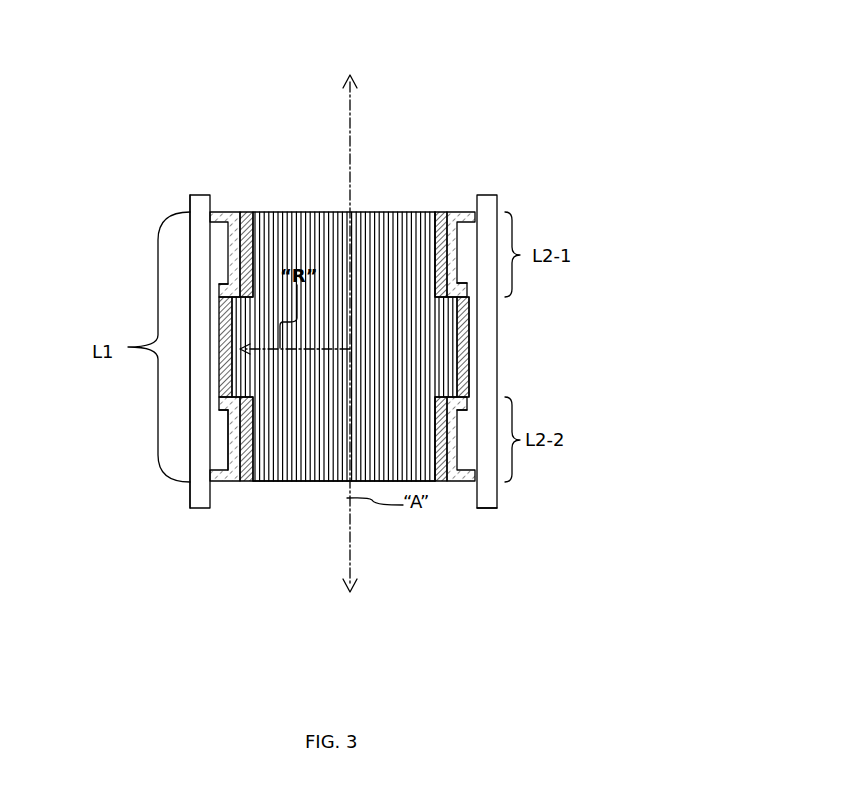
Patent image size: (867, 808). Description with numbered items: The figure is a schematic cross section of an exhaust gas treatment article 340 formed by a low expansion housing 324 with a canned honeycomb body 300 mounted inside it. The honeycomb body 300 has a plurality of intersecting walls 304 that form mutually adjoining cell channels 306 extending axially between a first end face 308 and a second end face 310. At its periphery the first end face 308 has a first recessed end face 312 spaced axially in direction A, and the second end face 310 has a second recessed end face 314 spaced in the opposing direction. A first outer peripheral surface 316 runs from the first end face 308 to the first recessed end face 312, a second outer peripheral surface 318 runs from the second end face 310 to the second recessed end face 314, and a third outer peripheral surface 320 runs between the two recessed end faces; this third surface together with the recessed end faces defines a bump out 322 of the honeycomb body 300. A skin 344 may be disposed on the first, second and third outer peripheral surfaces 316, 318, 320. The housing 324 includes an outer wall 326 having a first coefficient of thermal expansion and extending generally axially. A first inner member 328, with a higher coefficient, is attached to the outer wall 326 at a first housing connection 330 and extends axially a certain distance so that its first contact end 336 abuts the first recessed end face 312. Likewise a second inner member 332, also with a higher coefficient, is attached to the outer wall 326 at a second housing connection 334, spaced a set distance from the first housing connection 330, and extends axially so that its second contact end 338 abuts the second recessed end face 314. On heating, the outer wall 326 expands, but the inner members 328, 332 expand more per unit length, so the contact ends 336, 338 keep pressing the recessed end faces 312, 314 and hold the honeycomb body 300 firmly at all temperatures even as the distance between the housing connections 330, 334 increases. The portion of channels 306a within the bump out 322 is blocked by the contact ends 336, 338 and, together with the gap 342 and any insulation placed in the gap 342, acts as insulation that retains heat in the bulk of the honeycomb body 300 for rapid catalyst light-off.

The honeycomb body 300 is at (273, 212).
The intersecting walls 304 is at (360, 212).
The cell channels 306 is at (400, 247).
The blocked channels 306a is at (221, 318).
The first end face 308 is at (318, 210).
The second end face 310 is at (310, 483).
The first recessed end face 312 is at (456, 285).
The second recessed end face 314 is at (459, 404).
The first outer peripheral surface 316 is at (222, 255).
The second outer peripheral surface 318 is at (232, 432).
The third outer peripheral surface 320 is at (470, 310).
The bump out 322 is at (470, 352).
The housing 324 is at (503, 149).
The outer wall 326 is at (492, 490).
The first inner member 328 is at (452, 235).
The first housing connection 330 is at (465, 212).
The second inner member 332 is at (448, 482).
The second housing connection 334 is at (467, 483).
The first contact end 336 is at (227, 296).
The second contact end 338 is at (222, 404).
The exhaust gas treatment article 340 is at (295, 69).
The gap 342 is at (222, 427).
The skin 344 is at (243, 482).